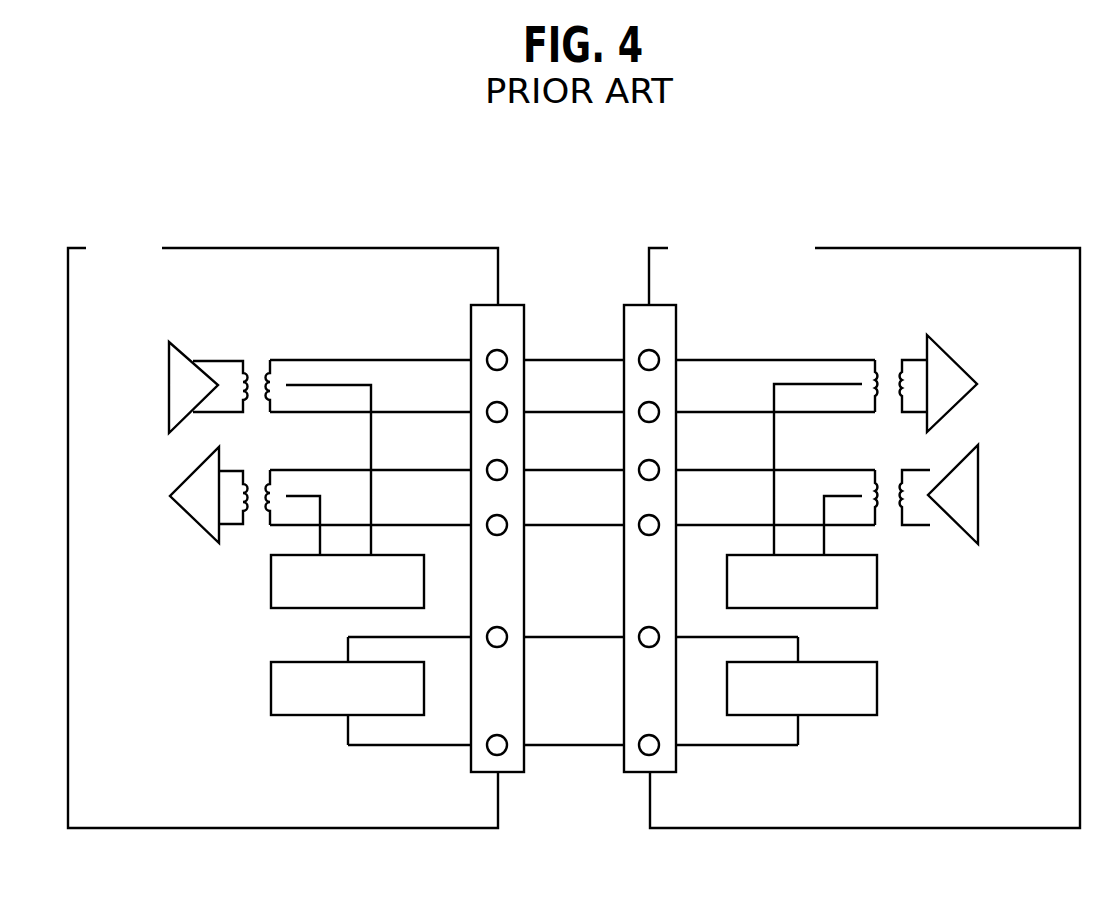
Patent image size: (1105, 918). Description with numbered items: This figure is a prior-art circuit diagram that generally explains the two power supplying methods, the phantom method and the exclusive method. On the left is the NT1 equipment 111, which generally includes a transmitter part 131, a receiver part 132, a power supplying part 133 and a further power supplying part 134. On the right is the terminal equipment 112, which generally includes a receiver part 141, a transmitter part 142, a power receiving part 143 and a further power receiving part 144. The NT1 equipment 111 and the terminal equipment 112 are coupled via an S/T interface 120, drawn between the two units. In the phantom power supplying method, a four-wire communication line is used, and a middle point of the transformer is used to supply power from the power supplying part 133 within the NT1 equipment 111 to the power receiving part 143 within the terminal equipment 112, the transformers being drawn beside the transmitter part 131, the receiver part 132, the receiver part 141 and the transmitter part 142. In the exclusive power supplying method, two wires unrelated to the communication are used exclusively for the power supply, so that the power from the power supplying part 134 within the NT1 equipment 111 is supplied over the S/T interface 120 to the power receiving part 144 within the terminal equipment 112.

The NT1 equipment 111 is at (238, 828).
The terminal equipment 112 is at (845, 828).
The S/T interface 120 is at (572, 778).
The transmitter part 131 is at (172, 342).
The receiver part 132 is at (178, 504).
The power supplying part 133 is at (271, 608).
The power supplying part 134 is at (271, 715).
The receiver part 141 is at (960, 352).
The transmitter part 142 is at (970, 546).
The power receiving part 143 is at (877, 607).
The power receiving part 144 is at (877, 715).